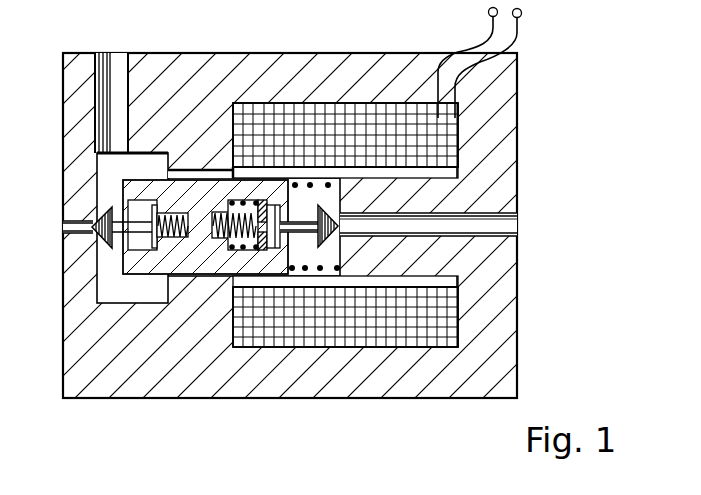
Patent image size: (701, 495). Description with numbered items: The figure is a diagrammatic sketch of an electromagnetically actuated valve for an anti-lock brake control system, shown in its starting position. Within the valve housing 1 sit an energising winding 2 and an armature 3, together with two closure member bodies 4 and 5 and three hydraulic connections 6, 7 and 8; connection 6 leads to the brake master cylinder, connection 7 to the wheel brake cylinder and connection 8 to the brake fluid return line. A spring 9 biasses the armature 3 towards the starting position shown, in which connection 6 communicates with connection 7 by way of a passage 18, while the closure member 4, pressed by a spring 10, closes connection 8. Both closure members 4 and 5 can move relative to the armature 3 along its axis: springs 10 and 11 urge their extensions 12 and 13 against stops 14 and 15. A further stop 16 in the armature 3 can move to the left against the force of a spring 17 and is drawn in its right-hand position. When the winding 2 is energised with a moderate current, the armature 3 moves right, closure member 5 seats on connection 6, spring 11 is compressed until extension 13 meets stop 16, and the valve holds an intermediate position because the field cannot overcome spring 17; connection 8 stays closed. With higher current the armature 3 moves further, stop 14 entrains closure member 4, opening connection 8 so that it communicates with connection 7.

The valve housing 1 is at (494, 121).
The energising winding 2 is at (300, 120).
The armature 3 is at (204, 195).
The closure member body 4 is at (95, 222).
The closure member body 5 is at (326, 238).
The hydraulic connection 6 is at (506, 227).
The hydraulic connection 7 is at (113, 72).
The hydraulic connection 8 is at (63, 227).
The spring 9 is at (304, 271).
The spring 10 is at (162, 282).
The spring 11 is at (207, 280).
The extension 12 is at (155, 240).
The extension 13 is at (283, 198).
The stop 14 is at (128, 208).
The stop 15 is at (260, 274).
The stop 16 is at (270, 200).
The spring 17 is at (234, 284).
The passage 18 is at (187, 176).